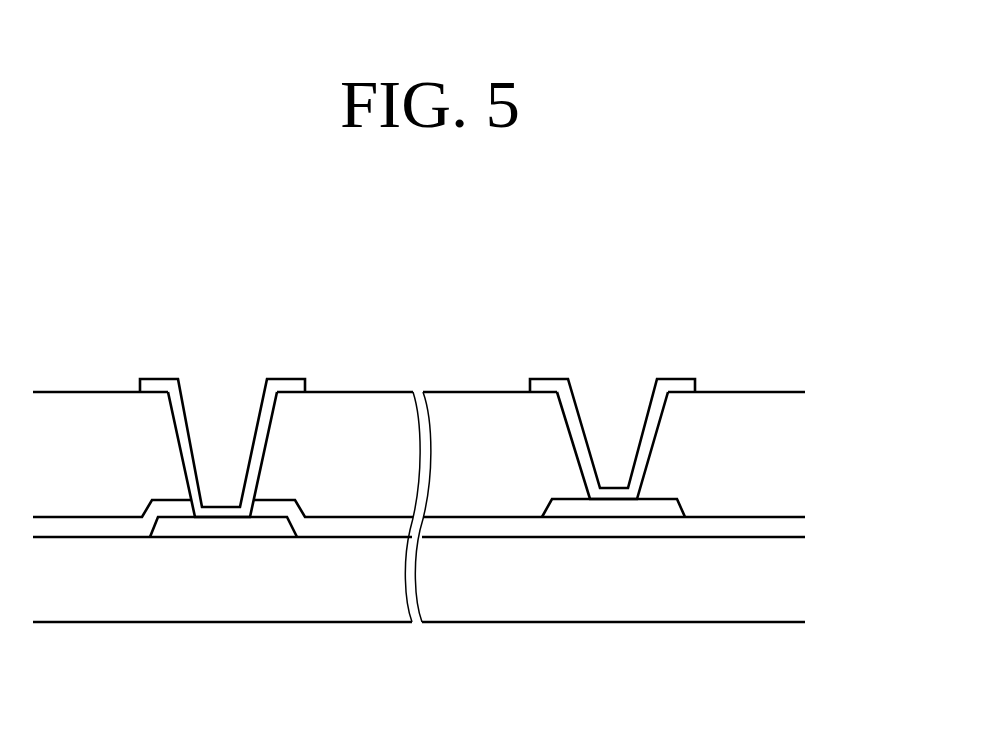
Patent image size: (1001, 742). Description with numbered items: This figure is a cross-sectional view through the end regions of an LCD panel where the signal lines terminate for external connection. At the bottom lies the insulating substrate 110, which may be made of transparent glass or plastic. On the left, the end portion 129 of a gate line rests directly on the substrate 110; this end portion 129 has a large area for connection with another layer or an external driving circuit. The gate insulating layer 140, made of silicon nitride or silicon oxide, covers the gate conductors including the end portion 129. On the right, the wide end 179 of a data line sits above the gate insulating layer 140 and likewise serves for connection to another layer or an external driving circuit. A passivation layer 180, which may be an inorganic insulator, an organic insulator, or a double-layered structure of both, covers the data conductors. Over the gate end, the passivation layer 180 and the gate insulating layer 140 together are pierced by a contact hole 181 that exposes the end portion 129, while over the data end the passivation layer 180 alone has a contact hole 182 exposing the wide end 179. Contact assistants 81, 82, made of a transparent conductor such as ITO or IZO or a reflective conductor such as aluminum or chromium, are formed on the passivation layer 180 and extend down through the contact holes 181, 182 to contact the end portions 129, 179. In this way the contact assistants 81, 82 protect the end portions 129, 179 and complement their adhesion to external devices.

The insulating substrate 110 is at (278, 590).
The end portion 129 is at (198, 530).
The gate insulating layer 140 is at (82, 530).
The wide end 179 is at (562, 510).
The passivation layer 180 is at (72, 415).
The contact assistant 81 is at (159, 383).
The contact assistant 82 is at (559, 385).
The contact hole 181 is at (185, 462).
The contact hole 182 is at (578, 452).